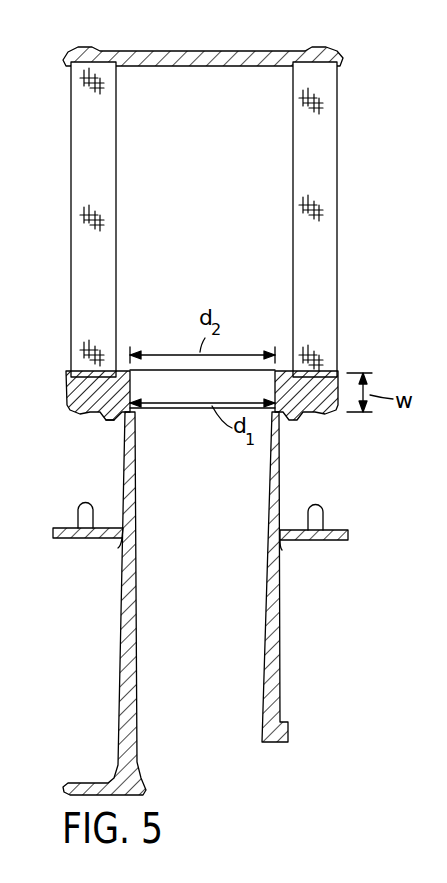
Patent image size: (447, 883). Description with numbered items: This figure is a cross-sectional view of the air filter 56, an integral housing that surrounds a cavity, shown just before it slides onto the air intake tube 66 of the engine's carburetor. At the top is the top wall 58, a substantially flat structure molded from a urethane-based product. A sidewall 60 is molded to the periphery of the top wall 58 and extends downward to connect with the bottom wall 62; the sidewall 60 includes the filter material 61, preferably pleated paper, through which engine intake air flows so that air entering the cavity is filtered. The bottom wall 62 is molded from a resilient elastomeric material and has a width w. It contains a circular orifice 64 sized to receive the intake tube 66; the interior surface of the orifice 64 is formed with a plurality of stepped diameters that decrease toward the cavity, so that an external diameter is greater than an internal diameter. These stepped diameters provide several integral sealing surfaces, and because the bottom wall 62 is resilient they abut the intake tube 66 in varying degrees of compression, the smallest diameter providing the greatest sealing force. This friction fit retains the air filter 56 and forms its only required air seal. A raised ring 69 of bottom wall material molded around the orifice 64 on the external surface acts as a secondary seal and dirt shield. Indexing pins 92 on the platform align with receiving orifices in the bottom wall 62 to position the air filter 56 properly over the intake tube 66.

The air filter 56 is at (214, 196).
The top wall 58 is at (73, 52).
The sidewall 60 is at (61, 181).
The filter material 61 is at (87, 264).
The bottom wall 62 is at (65, 393).
The orifice 64 is at (189, 445).
The air intake tube 66 is at (213, 602).
The raised ring 69 is at (108, 424).
The indexing pins 92 is at (323, 512).